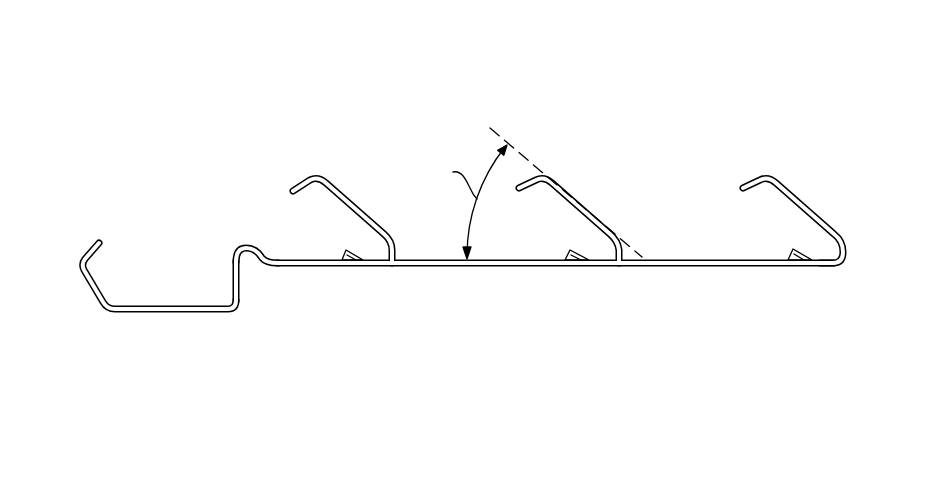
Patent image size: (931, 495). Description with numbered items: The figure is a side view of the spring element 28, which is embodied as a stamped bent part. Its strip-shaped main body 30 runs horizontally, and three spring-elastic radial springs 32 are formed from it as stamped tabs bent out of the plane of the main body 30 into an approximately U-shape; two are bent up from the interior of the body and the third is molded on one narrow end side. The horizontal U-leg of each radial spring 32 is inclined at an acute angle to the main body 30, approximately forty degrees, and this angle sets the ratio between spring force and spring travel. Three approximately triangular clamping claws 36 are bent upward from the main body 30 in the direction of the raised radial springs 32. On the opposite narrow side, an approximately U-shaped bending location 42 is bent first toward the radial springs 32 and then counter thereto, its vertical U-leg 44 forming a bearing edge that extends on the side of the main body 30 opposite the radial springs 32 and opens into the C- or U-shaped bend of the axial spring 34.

The spring element 28 is at (118, 133).
The main body 30 is at (555, 322).
The radial spring 32 is at (362, 203).
The axial spring 34 is at (160, 313).
The clamping claw 36 is at (350, 268).
The bending location 42 is at (240, 247).
The U-leg 44 is at (227, 273).